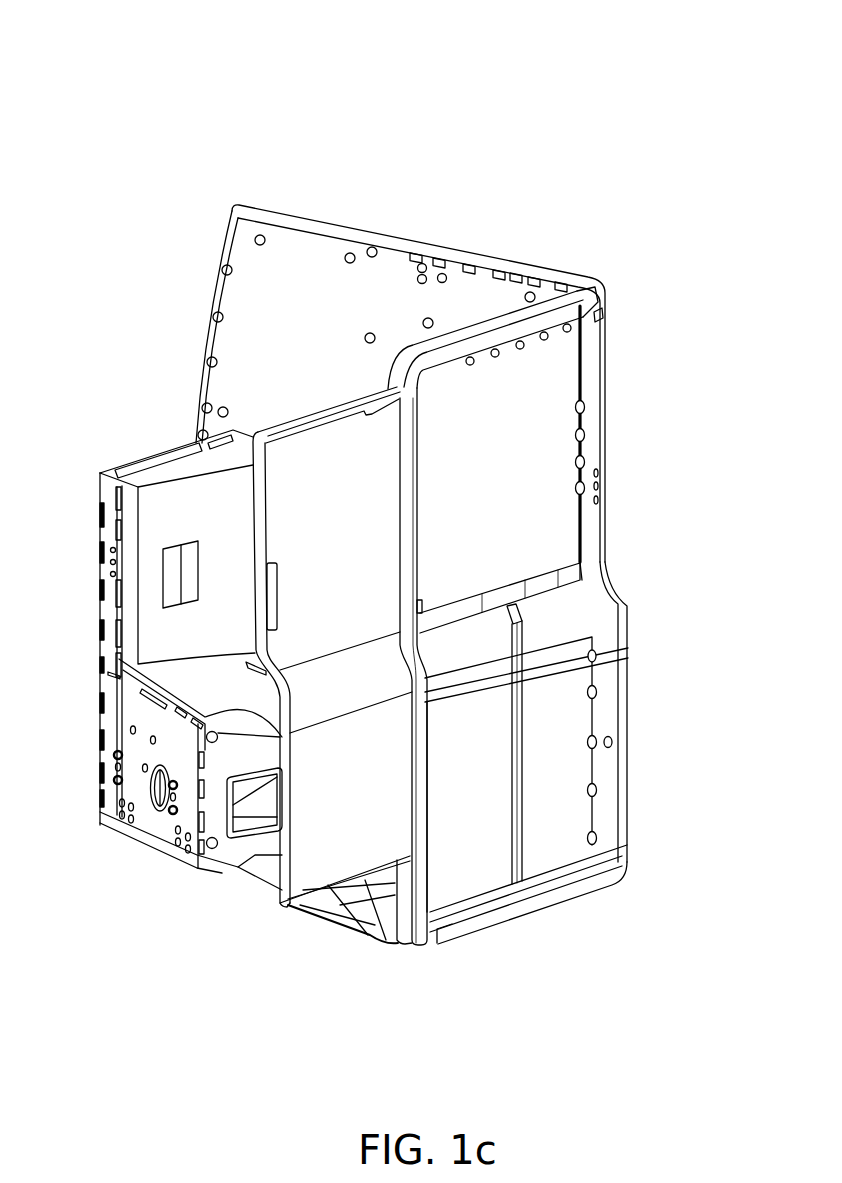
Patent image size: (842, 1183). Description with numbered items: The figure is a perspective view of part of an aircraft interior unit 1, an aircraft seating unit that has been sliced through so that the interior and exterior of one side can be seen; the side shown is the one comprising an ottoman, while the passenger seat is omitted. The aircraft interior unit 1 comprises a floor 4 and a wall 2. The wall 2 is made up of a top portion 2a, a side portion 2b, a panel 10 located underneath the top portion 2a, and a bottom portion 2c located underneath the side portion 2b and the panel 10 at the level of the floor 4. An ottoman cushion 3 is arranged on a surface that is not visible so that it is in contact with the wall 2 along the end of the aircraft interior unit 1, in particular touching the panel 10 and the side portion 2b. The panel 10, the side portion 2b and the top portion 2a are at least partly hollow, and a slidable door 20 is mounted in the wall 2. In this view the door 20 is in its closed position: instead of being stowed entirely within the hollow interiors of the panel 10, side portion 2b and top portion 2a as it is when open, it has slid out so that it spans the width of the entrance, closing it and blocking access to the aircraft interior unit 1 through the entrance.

The aircraft interior unit 1 is at (660, 122).
The wall 2 is at (680, 407).
The top portion 2a is at (520, 498).
The side portion 2b is at (553, 743).
The bottom portion 2c is at (543, 898).
The ottoman cushion 3 is at (205, 680).
The floor 4 is at (380, 927).
The panel 10 is at (477, 837).
The slidable door 20 is at (337, 815).